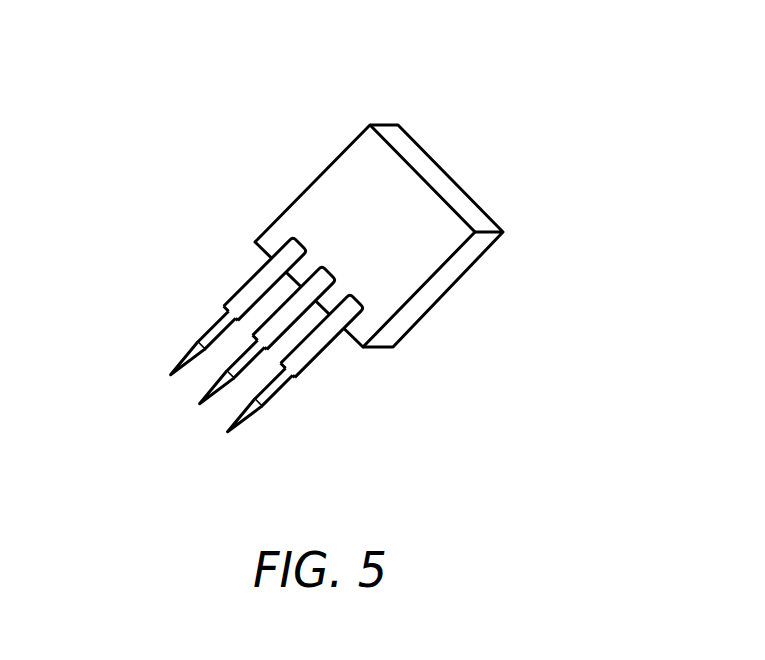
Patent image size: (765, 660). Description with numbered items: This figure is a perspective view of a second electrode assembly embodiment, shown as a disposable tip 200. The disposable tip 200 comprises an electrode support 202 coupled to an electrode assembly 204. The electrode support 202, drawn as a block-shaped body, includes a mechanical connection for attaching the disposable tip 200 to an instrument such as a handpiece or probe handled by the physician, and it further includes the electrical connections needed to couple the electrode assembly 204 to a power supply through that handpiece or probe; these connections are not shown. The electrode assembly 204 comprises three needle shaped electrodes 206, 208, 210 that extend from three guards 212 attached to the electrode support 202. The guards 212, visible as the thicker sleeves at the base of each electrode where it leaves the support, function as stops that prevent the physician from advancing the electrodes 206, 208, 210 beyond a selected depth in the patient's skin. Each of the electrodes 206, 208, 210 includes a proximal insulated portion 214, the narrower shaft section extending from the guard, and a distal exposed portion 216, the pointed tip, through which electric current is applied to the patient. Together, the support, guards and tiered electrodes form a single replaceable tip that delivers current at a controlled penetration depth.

The disposable tip 200 is at (212, 133).
The electrode support 202 is at (458, 268).
The electrode assembly 204 is at (306, 401).
The needle shaped electrode 206 is at (197, 251).
The needle shaped electrode 208 is at (250, 370).
The needle shaped electrode 210 is at (278, 402).
The guard 212 is at (305, 234).
The proximal insulated portion 214 is at (203, 340).
The distal exposed portion 216 is at (185, 358).